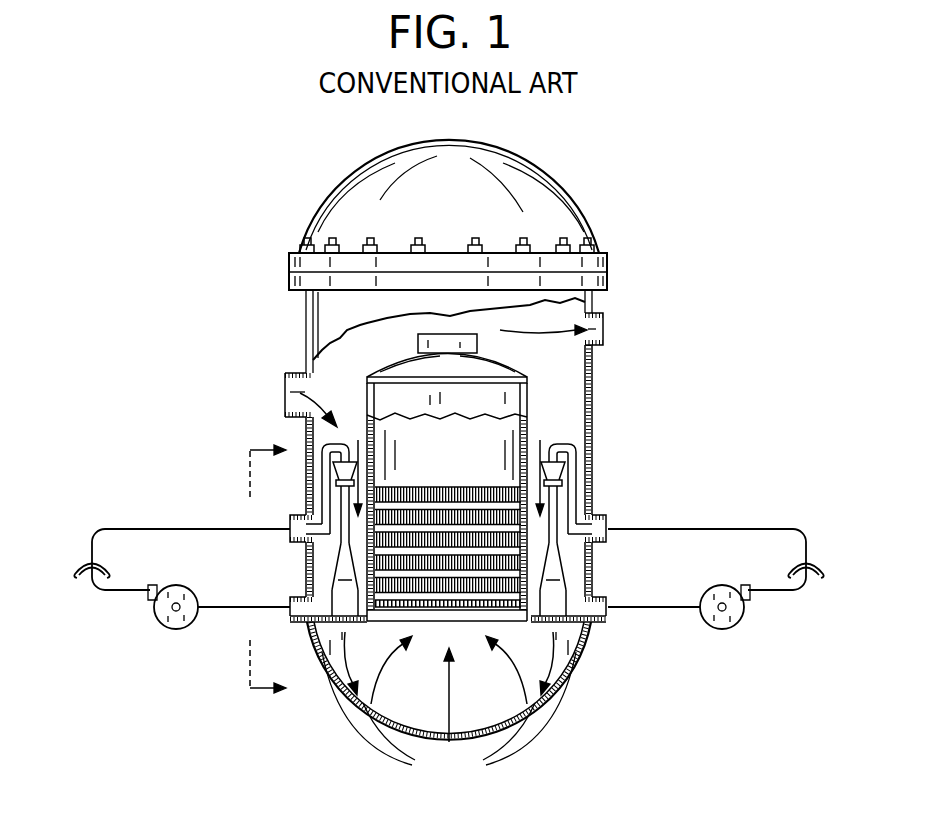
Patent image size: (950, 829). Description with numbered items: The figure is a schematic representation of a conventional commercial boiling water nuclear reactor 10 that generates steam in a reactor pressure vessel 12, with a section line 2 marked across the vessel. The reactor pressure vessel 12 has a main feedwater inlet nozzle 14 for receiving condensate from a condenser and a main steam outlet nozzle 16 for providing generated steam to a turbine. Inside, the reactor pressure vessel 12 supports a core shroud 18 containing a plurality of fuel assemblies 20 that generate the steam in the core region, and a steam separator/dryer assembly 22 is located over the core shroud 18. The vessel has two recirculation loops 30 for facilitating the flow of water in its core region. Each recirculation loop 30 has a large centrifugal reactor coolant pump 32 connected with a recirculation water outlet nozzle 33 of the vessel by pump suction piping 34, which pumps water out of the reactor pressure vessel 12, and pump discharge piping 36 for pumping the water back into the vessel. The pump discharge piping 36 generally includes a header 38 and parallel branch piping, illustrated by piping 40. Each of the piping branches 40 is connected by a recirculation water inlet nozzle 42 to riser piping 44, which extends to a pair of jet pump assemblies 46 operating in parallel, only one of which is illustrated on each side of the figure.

The section line 2- 2 is at (264, 571).
The boiling water nuclear reactor 10 is at (152, 290).
The reactor pressure vessel 12 is at (306, 330).
The main feedwater inlet nozzle 14 is at (286, 392).
The main steam outlet nozzle 16 is at (604, 328).
The core shroud 18 is at (528, 399).
The fuel assemblies 20 is at (455, 487).
The steam separator/dryer assembly 22 is at (418, 342).
The recirculation loops 30 is at (150, 528).
The reactor coolant pump 32 is at (172, 630).
The recirculation water outlet nozzle 33 is at (294, 602).
The pump suction piping 34 is at (225, 606).
The pump discharge piping 36 is at (120, 600).
The header 38 is at (90, 582).
The branch piping 40 is at (92, 548).
The recirculation water inlet nozzle 42 is at (600, 522).
The riser piping 44 is at (588, 466).
The jet pump assemblies 46 is at (449, 516).